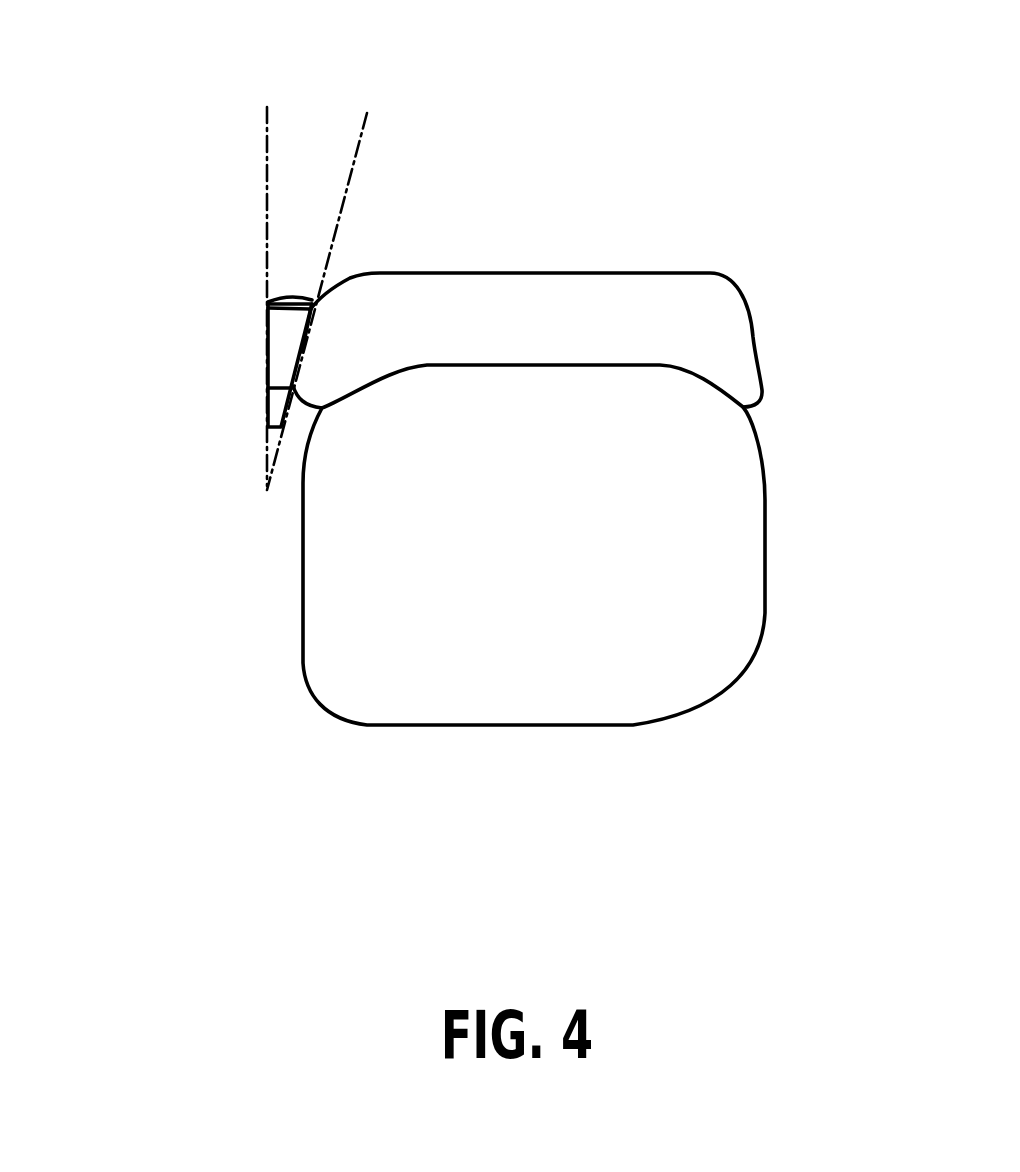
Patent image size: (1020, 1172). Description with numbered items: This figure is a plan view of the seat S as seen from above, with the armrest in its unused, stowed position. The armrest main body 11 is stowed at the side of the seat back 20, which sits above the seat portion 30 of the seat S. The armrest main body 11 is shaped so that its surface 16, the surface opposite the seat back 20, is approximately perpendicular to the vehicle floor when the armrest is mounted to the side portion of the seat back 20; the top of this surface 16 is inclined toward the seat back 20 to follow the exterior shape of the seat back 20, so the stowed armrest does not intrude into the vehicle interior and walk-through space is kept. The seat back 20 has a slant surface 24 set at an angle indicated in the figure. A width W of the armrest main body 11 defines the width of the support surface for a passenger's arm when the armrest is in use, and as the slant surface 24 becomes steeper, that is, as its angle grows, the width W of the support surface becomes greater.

The armrest main body 11 is at (282, 348).
The surface 16 is at (268, 318).
The seat back 20 is at (578, 285).
The slant surface 24 is at (303, 351).
The seat portion 30 is at (595, 715).
The width W is at (294, 290).
The seat S is at (748, 258).